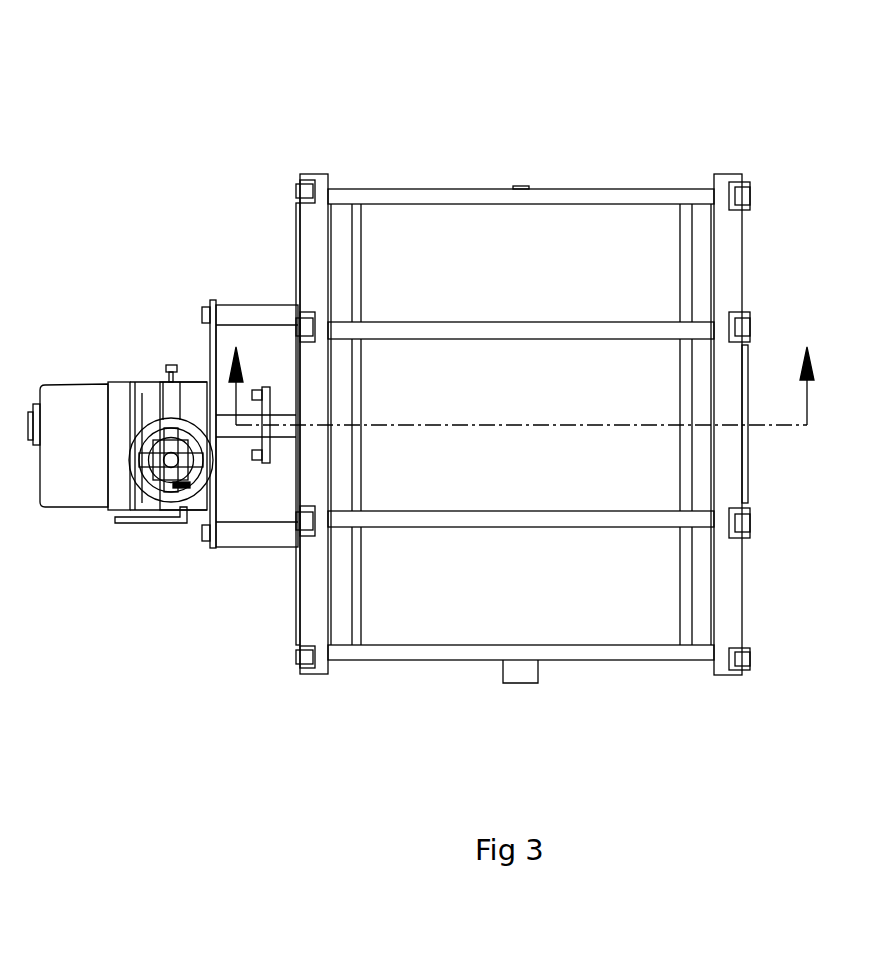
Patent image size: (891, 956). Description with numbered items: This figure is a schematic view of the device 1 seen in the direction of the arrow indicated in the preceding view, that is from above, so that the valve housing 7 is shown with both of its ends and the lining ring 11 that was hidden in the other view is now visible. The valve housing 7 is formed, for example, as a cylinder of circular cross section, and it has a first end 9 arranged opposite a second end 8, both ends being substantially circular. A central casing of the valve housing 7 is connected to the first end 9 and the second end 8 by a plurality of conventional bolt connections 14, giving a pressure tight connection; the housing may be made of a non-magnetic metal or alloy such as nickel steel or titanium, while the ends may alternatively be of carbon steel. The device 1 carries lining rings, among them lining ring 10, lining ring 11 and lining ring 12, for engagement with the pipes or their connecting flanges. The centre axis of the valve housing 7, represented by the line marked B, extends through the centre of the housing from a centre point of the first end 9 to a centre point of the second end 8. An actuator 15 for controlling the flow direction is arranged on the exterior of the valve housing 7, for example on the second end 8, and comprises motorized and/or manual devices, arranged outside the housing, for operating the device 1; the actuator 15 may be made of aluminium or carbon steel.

The device 1 is at (515, 393).
The valve housing 7 is at (627, 232).
The second end 8 is at (320, 655).
The first end 9 is at (735, 595).
The lining ring 10 is at (297, 600).
The lining ring 11 is at (297, 245).
The lining ring 12 is at (747, 473).
The bolt connections 14 is at (572, 196).
The actuator 15 is at (72, 492).